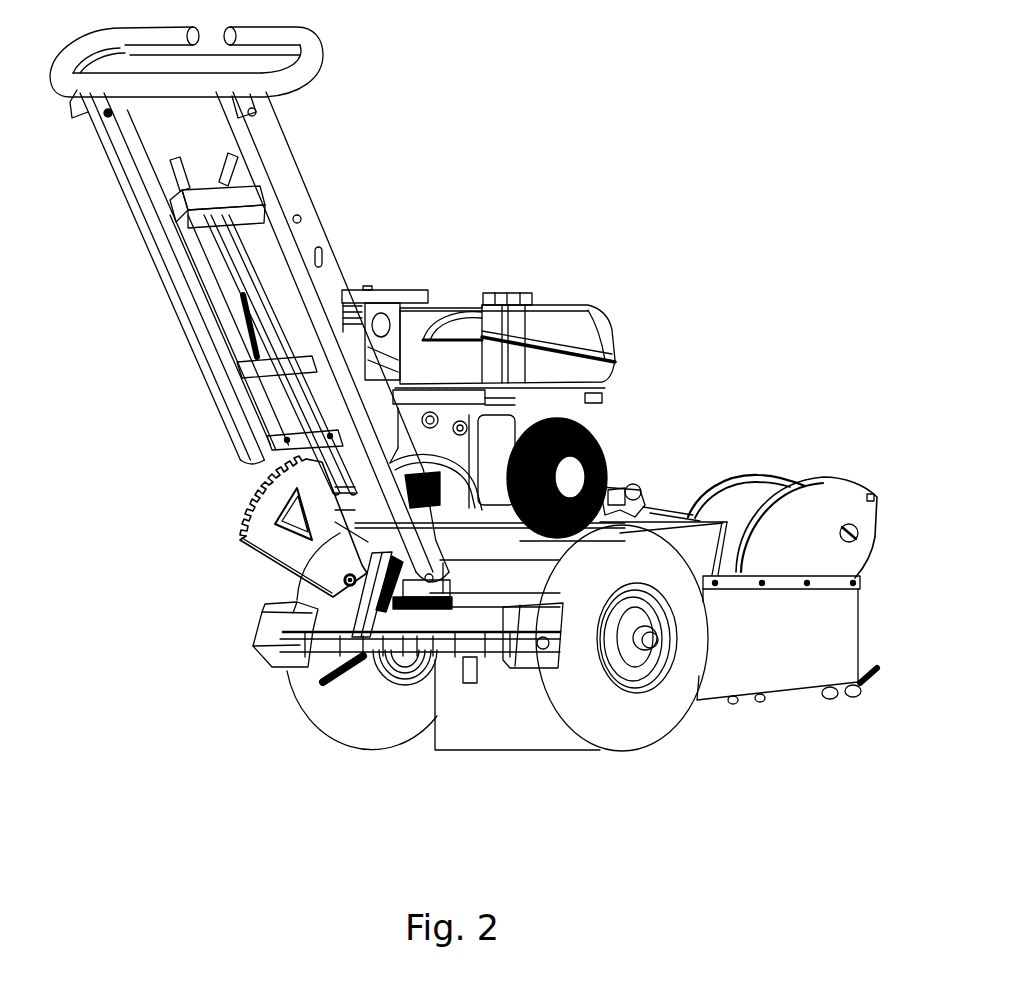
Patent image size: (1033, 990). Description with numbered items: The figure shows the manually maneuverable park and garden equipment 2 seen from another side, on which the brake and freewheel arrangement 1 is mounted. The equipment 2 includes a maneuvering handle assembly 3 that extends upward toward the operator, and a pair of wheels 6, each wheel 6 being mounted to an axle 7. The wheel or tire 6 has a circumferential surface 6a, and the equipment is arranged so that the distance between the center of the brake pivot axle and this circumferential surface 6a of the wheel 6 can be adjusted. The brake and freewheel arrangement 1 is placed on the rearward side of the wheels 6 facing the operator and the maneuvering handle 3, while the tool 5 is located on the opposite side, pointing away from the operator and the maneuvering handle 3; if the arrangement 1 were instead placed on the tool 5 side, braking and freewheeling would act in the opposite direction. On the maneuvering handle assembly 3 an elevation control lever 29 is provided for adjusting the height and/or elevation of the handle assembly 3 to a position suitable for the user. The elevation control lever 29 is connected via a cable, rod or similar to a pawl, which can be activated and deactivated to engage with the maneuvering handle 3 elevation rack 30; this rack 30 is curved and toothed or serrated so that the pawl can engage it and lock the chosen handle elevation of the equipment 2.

The brake and freewheel arrangement 1 is at (254, 648).
The manually maneuverable park and garden equipment 2 is at (548, 186).
The maneuvering handle assembly 3 is at (303, 197).
The tool 5 is at (810, 510).
The wheel 6 is at (640, 677).
The circumferential surface 6a is at (600, 720).
The axle 7 is at (650, 640).
The elevation control lever 29 is at (180, 167).
The elevation rack 30 is at (247, 550).